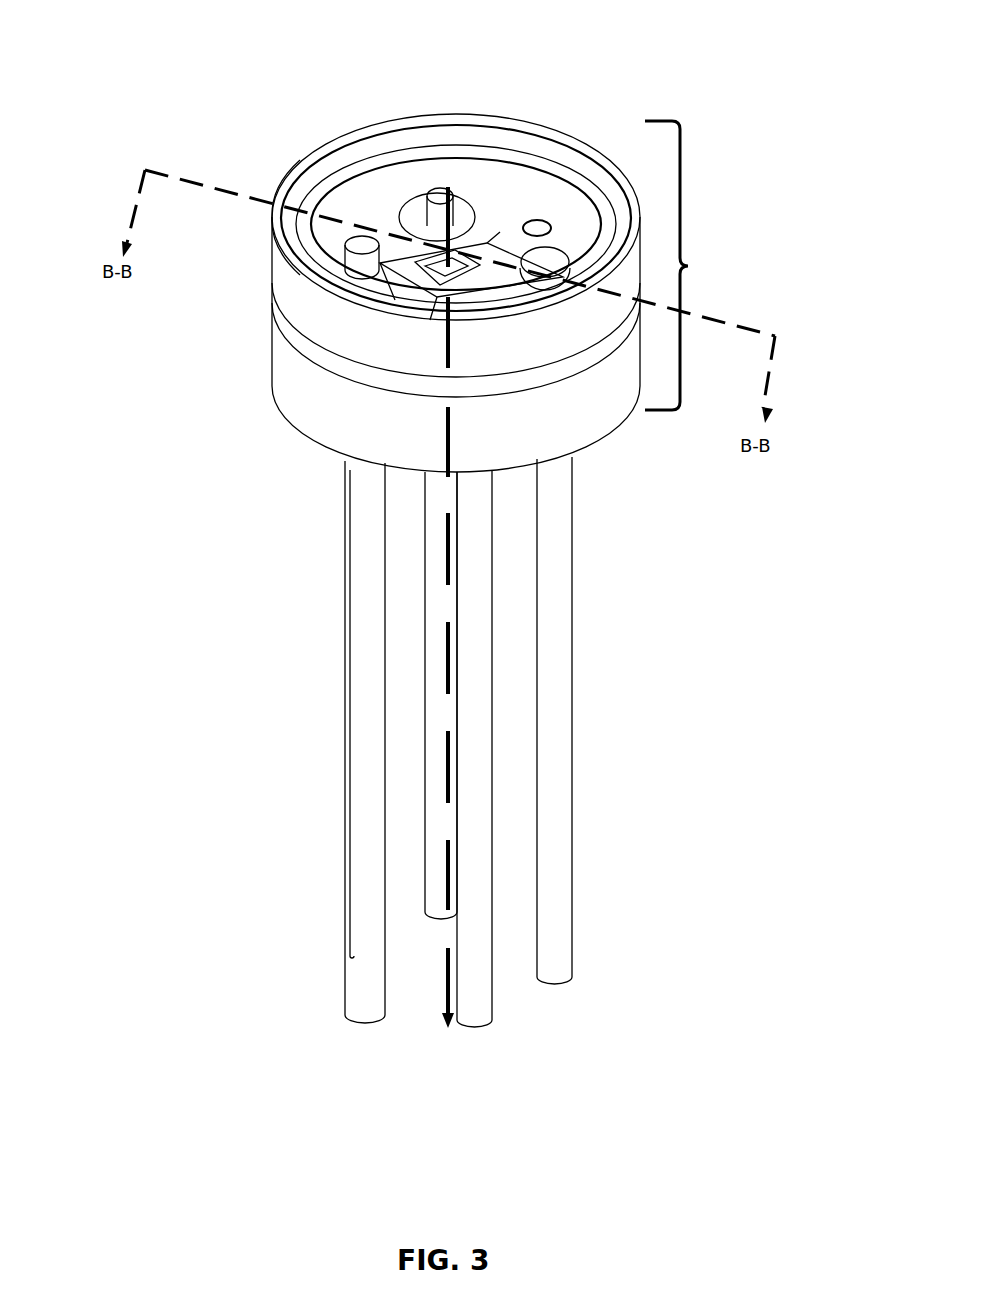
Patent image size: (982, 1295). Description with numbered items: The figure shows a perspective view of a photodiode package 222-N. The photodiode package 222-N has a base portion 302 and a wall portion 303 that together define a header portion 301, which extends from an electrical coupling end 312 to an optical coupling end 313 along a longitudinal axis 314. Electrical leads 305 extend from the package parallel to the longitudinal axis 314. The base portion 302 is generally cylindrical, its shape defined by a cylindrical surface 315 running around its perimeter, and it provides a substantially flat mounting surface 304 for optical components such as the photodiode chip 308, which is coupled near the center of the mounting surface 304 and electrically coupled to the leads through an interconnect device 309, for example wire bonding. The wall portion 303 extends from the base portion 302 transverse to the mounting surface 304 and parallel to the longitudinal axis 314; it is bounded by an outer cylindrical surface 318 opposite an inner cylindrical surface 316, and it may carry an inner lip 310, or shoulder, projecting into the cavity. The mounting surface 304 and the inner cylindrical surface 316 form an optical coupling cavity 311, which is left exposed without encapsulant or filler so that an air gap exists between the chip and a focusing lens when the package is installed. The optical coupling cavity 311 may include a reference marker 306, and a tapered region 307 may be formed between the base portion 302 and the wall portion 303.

The photodiode package 222-N is at (226, 90).
The header portion 301 is at (695, 265).
The base portion 302 is at (606, 400).
The wall portion 303 is at (277, 245).
The mounting surface 304 is at (372, 192).
The electrical leads 305 is at (310, 618).
The reference marker 306 is at (535, 222).
The tapered region 307 is at (268, 272).
The photodiode chip 308 is at (405, 285).
The interconnect device 309 is at (455, 290).
The inner lip 310 is at (552, 160).
The optical coupling cavity 311 is at (390, 130).
The electrical coupling end 312 is at (315, 473).
The optical coupling end 313 is at (433, 90).
The longitudinal axis 314 is at (450, 972).
The cylindrical surface 315 is at (266, 372).
The inner cylindrical surface 316 is at (296, 190).
The outer cylindrical surface 318 is at (568, 334).